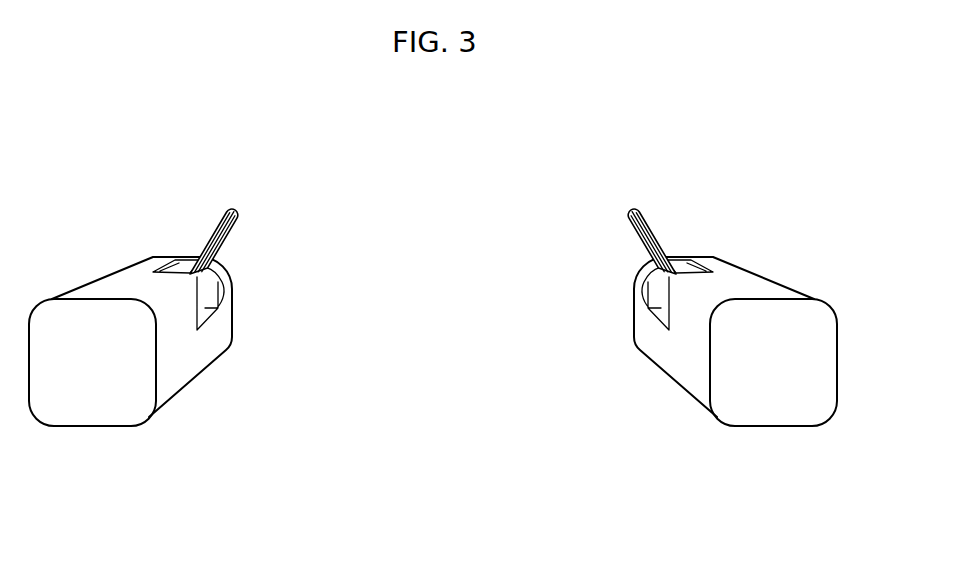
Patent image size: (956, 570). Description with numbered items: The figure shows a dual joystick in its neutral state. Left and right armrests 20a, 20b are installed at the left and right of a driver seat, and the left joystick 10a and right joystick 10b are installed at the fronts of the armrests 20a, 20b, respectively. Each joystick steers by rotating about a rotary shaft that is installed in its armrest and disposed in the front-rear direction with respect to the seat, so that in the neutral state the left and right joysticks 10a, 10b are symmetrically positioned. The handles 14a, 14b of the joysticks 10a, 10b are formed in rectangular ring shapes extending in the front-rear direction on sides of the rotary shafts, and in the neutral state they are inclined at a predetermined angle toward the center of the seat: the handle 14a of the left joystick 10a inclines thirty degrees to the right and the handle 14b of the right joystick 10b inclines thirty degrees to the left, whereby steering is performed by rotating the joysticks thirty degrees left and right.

The left joystick 10a is at (237, 285).
The right joystick 10b is at (630, 287).
The handle of the left joystick 14a is at (230, 207).
The handle of the right joystick 14b is at (636, 207).
The left armrest 20a is at (98, 398).
The right armrest 20b is at (772, 392).